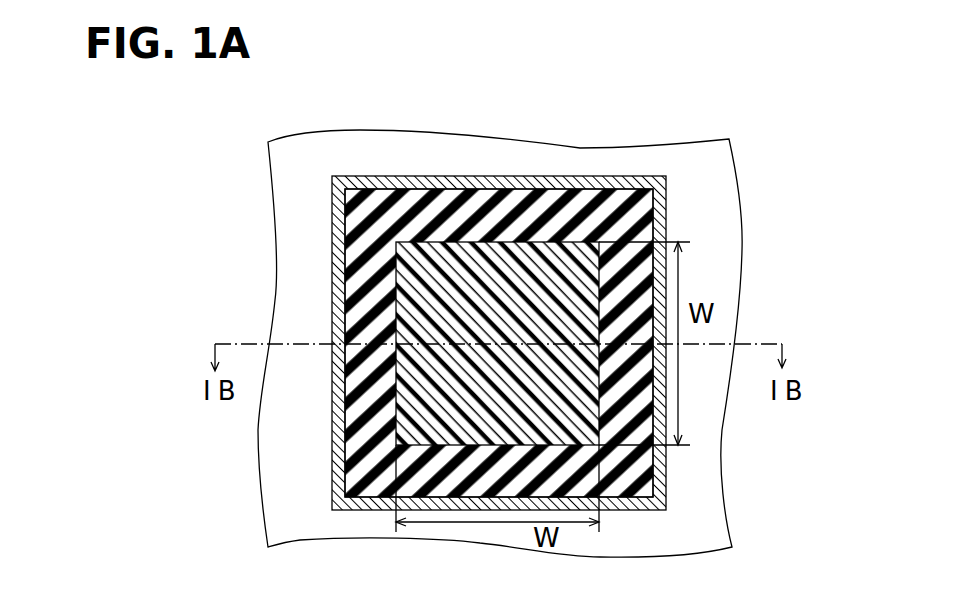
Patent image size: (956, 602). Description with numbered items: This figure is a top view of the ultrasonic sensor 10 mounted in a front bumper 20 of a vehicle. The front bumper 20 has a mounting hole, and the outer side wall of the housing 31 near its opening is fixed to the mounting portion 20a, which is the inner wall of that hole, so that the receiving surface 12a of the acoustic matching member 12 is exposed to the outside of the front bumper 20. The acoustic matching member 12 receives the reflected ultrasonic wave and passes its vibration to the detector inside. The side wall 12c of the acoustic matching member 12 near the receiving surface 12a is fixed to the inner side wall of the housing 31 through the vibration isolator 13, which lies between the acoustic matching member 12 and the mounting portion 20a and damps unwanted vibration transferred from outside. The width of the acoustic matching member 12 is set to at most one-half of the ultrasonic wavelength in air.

The ultrasonic sensor 10 is at (684, 128).
The acoustic matching member 12 is at (509, 340).
The receiving surface 12a is at (497, 343).
The side wall 12c is at (383, 257).
The vibration isolator 13 is at (638, 488).
The front bumper 20 is at (496, 338).
The mounting portion 20a is at (337, 467).
The housing 31 is at (338, 243).